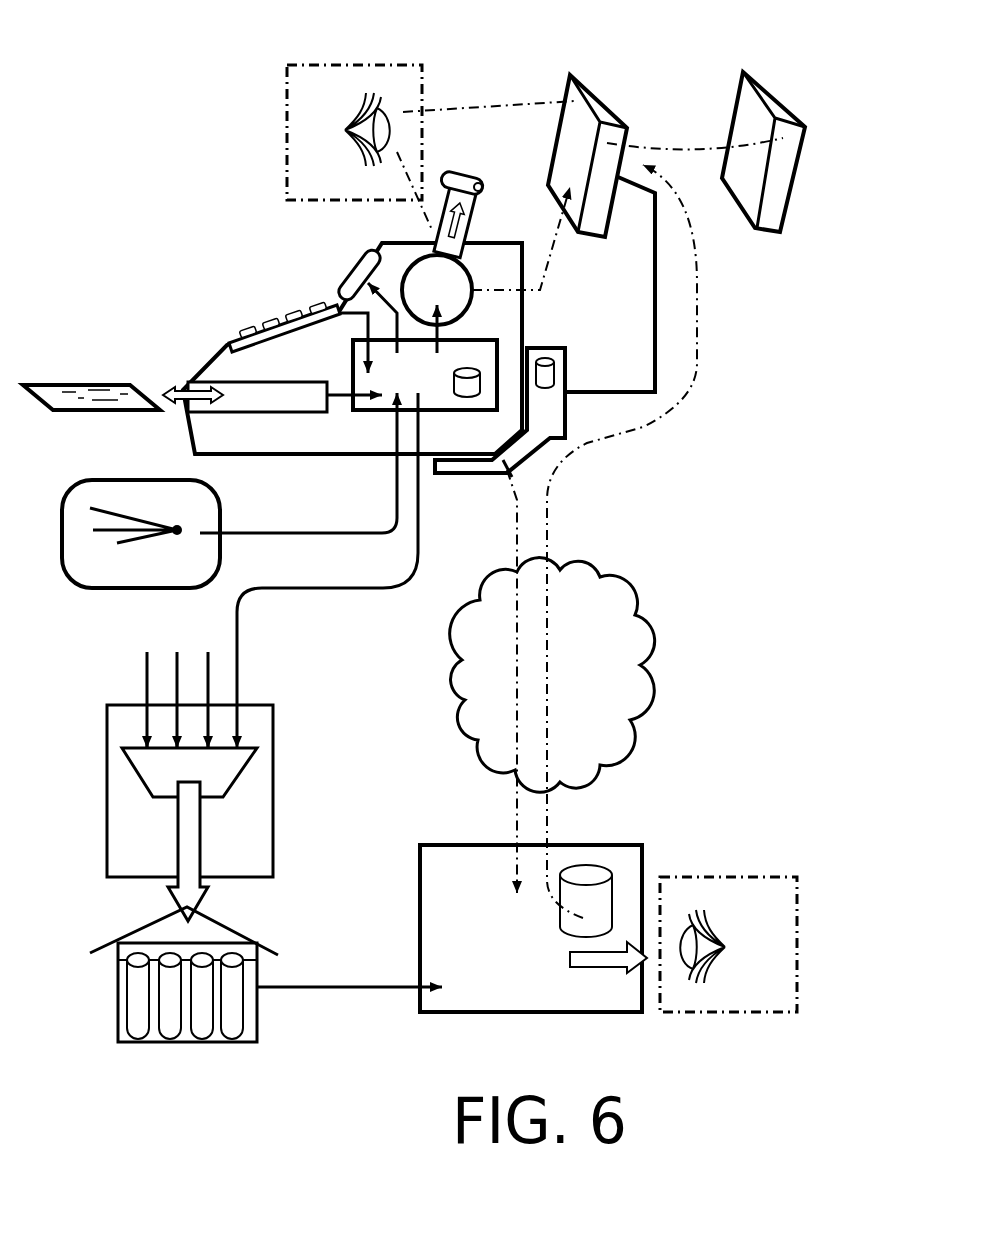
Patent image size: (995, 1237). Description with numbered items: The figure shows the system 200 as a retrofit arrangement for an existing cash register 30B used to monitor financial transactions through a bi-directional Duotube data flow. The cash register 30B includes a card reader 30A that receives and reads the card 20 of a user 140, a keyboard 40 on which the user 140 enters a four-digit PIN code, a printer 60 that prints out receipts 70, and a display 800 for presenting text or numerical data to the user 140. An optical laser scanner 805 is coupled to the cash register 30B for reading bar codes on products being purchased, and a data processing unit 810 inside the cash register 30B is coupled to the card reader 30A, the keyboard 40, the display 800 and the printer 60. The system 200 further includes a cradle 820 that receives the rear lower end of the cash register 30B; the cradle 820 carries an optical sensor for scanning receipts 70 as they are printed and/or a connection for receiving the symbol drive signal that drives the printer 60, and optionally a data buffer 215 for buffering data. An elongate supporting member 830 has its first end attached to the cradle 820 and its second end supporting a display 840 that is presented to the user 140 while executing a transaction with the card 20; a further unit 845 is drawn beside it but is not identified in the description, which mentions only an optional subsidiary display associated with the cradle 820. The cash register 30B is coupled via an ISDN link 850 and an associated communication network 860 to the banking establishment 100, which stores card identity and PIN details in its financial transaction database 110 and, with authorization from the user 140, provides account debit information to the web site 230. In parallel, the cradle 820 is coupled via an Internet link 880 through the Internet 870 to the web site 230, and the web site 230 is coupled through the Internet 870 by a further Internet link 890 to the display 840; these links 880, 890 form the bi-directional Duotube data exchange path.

The system 200 is at (150, 200).
The card 20 is at (73, 397).
The card reader 30A is at (250, 393).
The cash register 30B is at (304, 442).
The keyboard 40 is at (283, 330).
The printer 60 is at (451, 301).
The receipts 70 is at (463, 197).
The user 140 is at (347, 174).
The data buffer 215 is at (553, 370).
The web site 230 is at (497, 959).
The display 800 is at (365, 262).
The optical laser scanner 805 is at (174, 574).
The data processing unit 810 is at (432, 386).
The cradle 820 is at (540, 410).
The elongate supporting member 830 is at (657, 292).
The display 840 is at (597, 95).
The second display panel 845 is at (770, 200).
The ISDN link 850 is at (287, 592).
The communication network 860 is at (250, 841).
The Internet 870 is at (604, 639).
The Internet link 880 is at (515, 805).
The Internet link 890 is at (672, 412).
The banking establishment 100 is at (266, 964).
The financial transaction database 110 is at (203, 923).